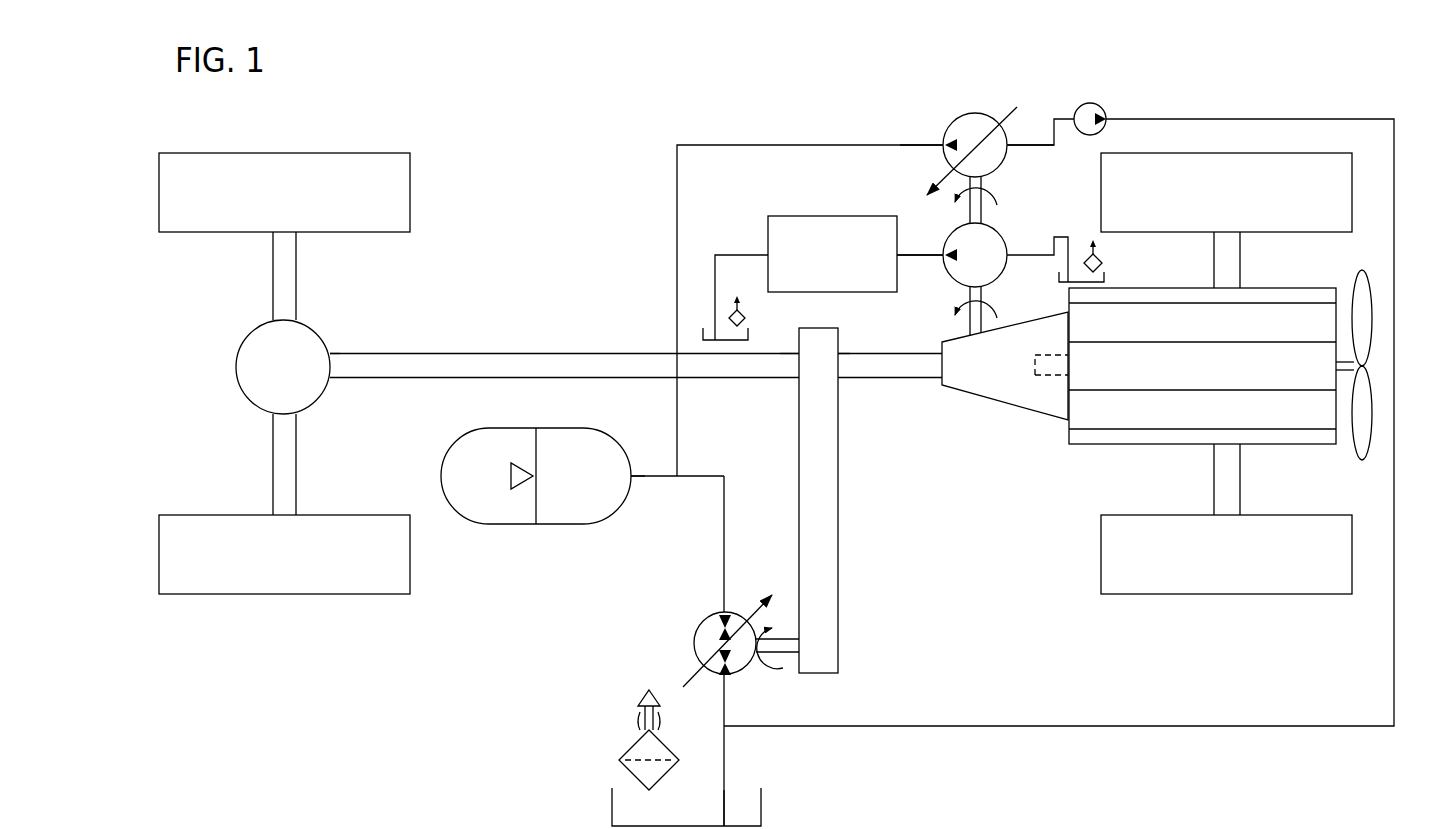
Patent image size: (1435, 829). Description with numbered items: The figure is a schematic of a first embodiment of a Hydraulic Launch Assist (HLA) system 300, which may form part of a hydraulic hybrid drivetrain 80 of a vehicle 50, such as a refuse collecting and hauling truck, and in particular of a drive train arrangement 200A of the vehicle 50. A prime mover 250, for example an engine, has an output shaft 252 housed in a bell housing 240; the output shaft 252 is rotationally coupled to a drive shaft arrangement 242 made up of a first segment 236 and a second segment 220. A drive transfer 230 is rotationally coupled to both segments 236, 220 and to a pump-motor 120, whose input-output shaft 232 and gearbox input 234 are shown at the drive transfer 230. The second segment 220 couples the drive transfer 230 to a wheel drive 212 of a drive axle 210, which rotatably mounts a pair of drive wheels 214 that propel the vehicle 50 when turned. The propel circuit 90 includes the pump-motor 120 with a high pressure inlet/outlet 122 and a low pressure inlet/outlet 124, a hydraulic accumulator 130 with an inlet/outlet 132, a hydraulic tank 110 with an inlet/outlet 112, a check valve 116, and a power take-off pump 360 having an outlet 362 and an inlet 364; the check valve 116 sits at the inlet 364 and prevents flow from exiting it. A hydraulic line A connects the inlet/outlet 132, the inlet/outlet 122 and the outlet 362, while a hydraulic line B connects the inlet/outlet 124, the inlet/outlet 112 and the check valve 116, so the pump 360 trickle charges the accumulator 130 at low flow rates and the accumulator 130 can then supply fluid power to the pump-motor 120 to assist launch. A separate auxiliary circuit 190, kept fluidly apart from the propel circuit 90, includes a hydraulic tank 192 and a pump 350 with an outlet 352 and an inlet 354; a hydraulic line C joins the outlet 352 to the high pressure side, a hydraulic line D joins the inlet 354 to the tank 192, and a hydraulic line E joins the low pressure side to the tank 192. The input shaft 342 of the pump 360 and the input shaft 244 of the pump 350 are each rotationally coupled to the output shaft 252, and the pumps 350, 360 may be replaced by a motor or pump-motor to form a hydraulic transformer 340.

The vehicle 50 is at (275, 687).
The hydraulic hybrid drivetrain 80 is at (503, 612).
The propel circuit 90 is at (732, 484).
The hydraulic tank 110 is at (612, 806).
The inlet/outlet 112 is at (724, 782).
The check valve 116 is at (1078, 148).
The pump-motor 120 is at (695, 627).
The high pressure inlet/outlet 122 is at (724, 594).
The low pressure inlet/outlet 124 is at (724, 695).
The hydraulic accumulator 130 is at (452, 450).
The inlet/outlet 132 is at (633, 480).
The auxiliary circuit 190 is at (792, 228).
The hydraulic tank 192 is at (750, 336).
The drive train arrangement 200A is at (405, 697).
The drive axle 210 is at (252, 391).
The wheel drive 212 is at (333, 365).
The drive wheels 214 is at (345, 162).
The second segment 220 is at (470, 363).
The drive transfer 230 is at (822, 612).
The input-output shaft 232 is at (797, 650).
The gearbox input 234 is at (789, 364).
The first segment 236 is at (840, 365).
The housing 240 is at (1037, 388).
The drive shaft arrangement 242 is at (937, 363).
The input shaft 244 is at (972, 328).
The prime mover 250 is at (1093, 444).
The output shaft 252 is at (1055, 376).
The HLA system 300 is at (590, 118).
The hydraulic transformer 340 is at (947, 125).
The input shaft 342 is at (980, 185).
The pump 350 is at (944, 229).
The outlet 352 is at (912, 258).
The inlet 354 is at (1027, 253).
The pump 360 is at (988, 112).
The outlet 362 is at (907, 145).
The inlet 364 is at (1022, 143).
The hydraulic line A is at (674, 262).
The hydraulic line B is at (1032, 725).
The hydraulic line C is at (926, 252).
The hydraulic line D is at (1016, 262).
The hydraulic line E is at (730, 252).